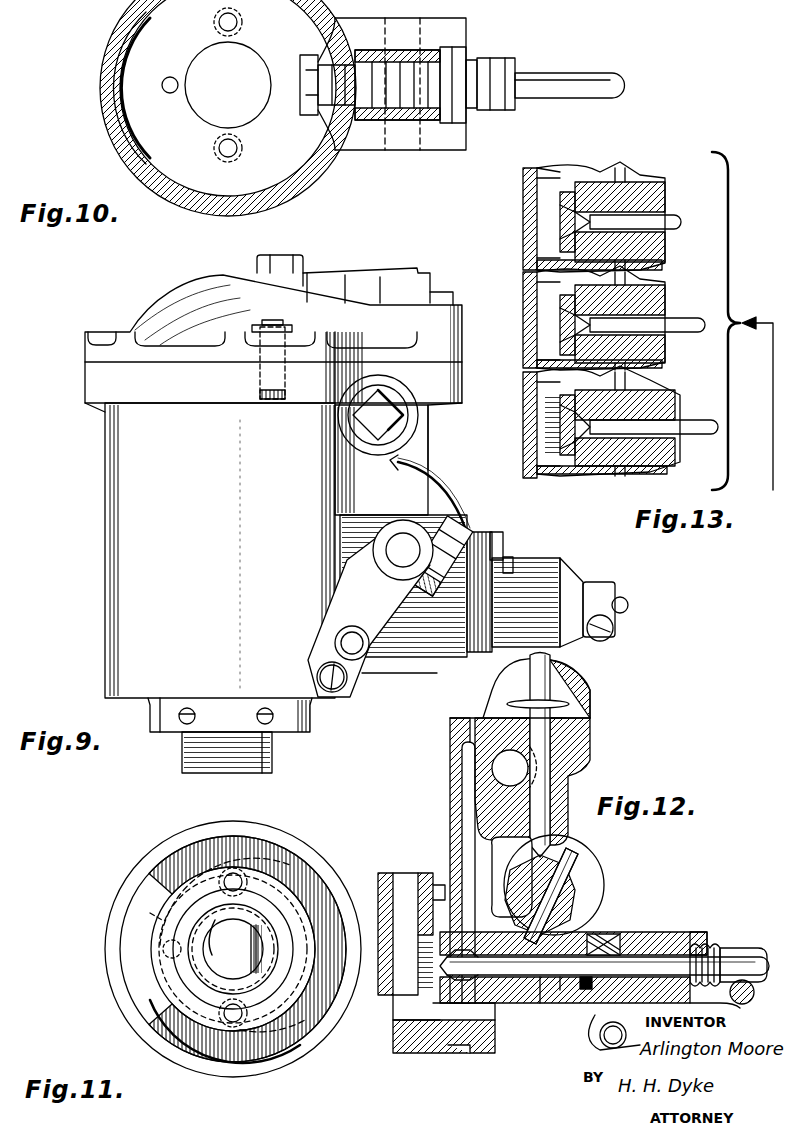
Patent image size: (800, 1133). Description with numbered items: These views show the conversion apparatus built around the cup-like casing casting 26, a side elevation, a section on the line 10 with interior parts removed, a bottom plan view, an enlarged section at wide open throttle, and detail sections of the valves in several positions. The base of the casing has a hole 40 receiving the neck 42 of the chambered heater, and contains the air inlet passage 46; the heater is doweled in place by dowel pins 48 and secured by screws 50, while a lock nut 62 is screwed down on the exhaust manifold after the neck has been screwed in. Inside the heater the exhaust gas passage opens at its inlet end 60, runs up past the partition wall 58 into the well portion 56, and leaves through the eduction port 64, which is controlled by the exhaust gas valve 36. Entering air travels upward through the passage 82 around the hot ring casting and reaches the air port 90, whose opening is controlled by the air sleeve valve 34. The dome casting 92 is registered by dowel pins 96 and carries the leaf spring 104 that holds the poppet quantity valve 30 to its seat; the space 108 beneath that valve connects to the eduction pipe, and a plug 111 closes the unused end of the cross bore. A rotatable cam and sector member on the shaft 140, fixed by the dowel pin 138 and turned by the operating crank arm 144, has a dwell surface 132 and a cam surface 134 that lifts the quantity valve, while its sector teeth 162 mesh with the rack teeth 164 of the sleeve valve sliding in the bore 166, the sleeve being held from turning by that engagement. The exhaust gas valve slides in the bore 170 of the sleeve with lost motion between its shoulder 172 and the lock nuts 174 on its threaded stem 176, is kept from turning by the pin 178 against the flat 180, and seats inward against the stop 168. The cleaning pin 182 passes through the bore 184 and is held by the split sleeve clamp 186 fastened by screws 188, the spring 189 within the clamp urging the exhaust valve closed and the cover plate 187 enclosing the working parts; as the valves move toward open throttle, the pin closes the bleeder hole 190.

In FIG. 9, the section line 10 is at (100, 493).
In FIG. 10, the casing casting 26 is at (110, 96).
In FIG. 9, the casing casting 26 is at (105, 578).
In FIG. 12, the poppet quantity valve 30 is at (552, 704).
In FIG. 13, the air sleeve valve 34 is at (630, 200).
In FIG. 12, the air sleeve valve 34 is at (535, 990).
In FIG. 10, the exhaust gas valve 36 is at (310, 110).
In FIG. 13, the exhaust gas valve 36 is at (560, 195).
In FIG. 10, the hole 40 is at (186, 100).
In FIG. 9, the neck 42 is at (182, 752).
In FIG. 11, the neck 42 is at (262, 918).
In FIG. 11, the air inlet passage 46 is at (138, 945).
In FIG. 11, the dowel pins 48 is at (128, 915).
In FIG. 11, the screws 50 is at (255, 838).
In FIG. 12, the well portion 56 is at (395, 968).
In FIG. 11, the partition wall 58 is at (252, 962).
In FIG. 11, the inlet end 60 is at (214, 925).
In FIG. 9, the lock nut 62 is at (305, 716).
In FIG. 11, the lock nut 62 is at (205, 862).
In FIG. 12, the eduction port 64 is at (380, 915).
In FIG. 10, the passage 82 is at (122, 72).
In FIG. 11, the passage 82 is at (128, 927).
In FIG. 12, the air port 90 is at (546, 885).
In FIG. 9, the dome casting 92 is at (145, 311).
In FIG. 9, the dowel pins 96 is at (285, 320).
In FIG. 9, the leaf spring 104 is at (370, 266).
In FIG. 9, the space 108 is at (257, 262).
In FIG. 9, the plug 111 is at (385, 428).
In FIG. 12, the dwell surface 132 is at (478, 855).
In FIG. 12, the cam surface 134 is at (545, 855).
In FIG. 12, the dowel pin 138 is at (572, 868).
In FIG. 12, the shaft 140 is at (510, 877).
In FIG. 9, the operating crank arm 144 is at (350, 688).
In FIG. 12, the sector teeth 162 is at (575, 895).
In FIG. 10, the rack teeth 164 is at (415, 70).
In FIG. 12, the rack teeth 164 is at (570, 932).
In FIG. 12, the bore 166 is at (480, 1055).
In FIG. 12, the stop 168 is at (405, 1000).
In FIG. 12, the bore 170 is at (548, 990).
In FIG. 13, the shoulder 172 is at (624, 178).
In FIG. 10, the lock nuts 174 is at (505, 62).
In FIG. 12, the lock nuts 174 is at (677, 950).
In FIG. 12, the stem 176 is at (625, 950).
In FIG. 12, the pin or screw 178 is at (585, 990).
In FIG. 12, the flat 180 is at (578, 990).
In FIG. 10, the cleaning pin 182 is at (555, 78).
In FIG. 9, the cleaning pin 182 is at (628, 607).
In FIG. 13, the cleaning pin 182 is at (668, 224).
In FIG. 12, the cleaning pin 182 is at (648, 958).
In FIG. 13, the bore 184 is at (568, 228).
In FIG. 12, the bore 184 is at (518, 978).
In FIG. 9, the clamp 186 is at (563, 575).
In FIG. 12, the clamp 186 is at (728, 945).
In FIG. 9, the cover plate 187 is at (466, 512).
In FIG. 9, the screws 188 is at (497, 542).
In FIG. 12, the spring 189 is at (745, 976).
In FIG. 10, the bleeder hole 190 is at (304, 70).
In FIG. 13, the bleeder hole 190 is at (580, 222).